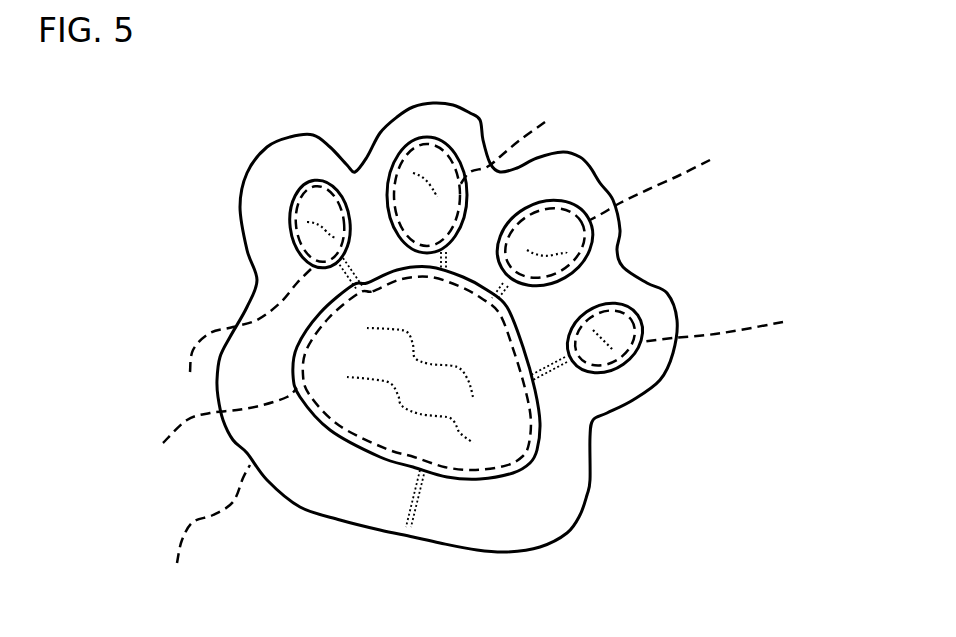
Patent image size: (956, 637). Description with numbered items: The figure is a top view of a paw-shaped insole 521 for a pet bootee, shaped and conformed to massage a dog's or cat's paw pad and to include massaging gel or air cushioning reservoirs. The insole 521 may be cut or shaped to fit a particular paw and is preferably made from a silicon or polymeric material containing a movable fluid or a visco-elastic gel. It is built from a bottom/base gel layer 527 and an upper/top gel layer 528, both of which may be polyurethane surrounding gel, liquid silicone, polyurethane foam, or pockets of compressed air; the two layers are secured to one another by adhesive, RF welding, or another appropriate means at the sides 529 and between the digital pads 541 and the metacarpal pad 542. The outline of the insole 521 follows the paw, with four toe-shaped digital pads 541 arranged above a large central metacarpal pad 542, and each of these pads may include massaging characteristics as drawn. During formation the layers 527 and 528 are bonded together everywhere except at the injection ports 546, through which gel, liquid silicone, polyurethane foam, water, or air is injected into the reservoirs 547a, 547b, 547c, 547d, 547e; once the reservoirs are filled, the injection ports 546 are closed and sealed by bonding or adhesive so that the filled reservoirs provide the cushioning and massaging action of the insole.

The gel insole 521 is at (288, 165).
The digital pad 541 is at (440, 163).
The metacarpal pad 542 is at (487, 410).
The injection port 546 is at (407, 528).
The reservoir 547a is at (203, 441).
The reservoir 547b is at (222, 340).
The reservoir 547c is at (524, 136).
The reservoir 547d is at (691, 176).
The reservoir 547e is at (751, 327).
The bottom/base gel layer 527 is at (198, 531).
The upper/top gel layer 528 is at (503, 505).
The side 529 is at (333, 520).